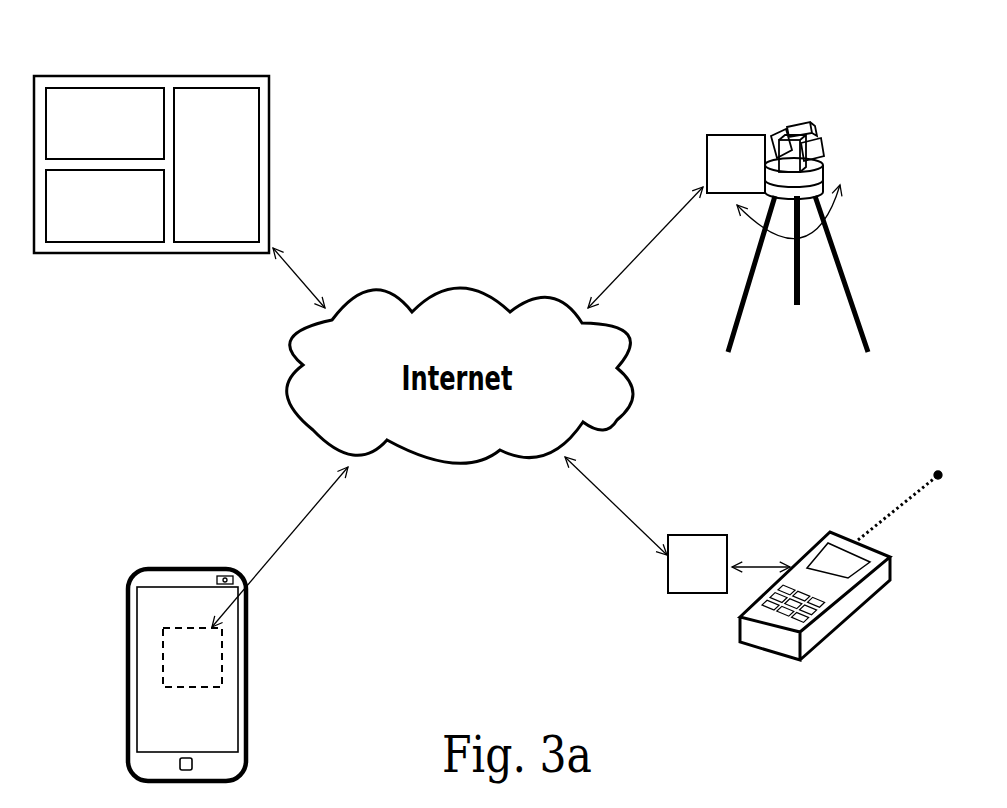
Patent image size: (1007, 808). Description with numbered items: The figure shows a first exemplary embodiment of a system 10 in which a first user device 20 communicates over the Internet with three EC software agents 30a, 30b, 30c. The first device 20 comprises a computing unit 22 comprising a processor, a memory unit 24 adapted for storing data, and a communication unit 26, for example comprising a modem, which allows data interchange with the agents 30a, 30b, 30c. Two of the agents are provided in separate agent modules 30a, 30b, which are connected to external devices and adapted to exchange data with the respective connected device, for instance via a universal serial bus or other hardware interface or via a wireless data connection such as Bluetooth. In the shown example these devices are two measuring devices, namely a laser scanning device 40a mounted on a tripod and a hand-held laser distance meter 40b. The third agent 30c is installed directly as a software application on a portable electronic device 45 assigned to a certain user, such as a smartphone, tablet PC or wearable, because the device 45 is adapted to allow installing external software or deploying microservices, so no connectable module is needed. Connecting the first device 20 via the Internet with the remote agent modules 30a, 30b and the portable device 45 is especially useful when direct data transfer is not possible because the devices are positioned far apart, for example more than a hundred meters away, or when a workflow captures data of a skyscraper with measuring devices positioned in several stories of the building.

The system 10 is at (637, 55).
The first user device 20 is at (270, 105).
The computing unit 22 is at (89, 140).
The memory unit 24 is at (89, 222).
The communication unit 26 is at (200, 183).
The agent module 30a is at (707, 135).
The agent module 30b is at (685, 595).
The software agent 30c is at (223, 656).
The laser scanning device 40a is at (838, 115).
The hand-held laser distance meter 40b is at (835, 651).
The portable electronic device 45 is at (147, 551).